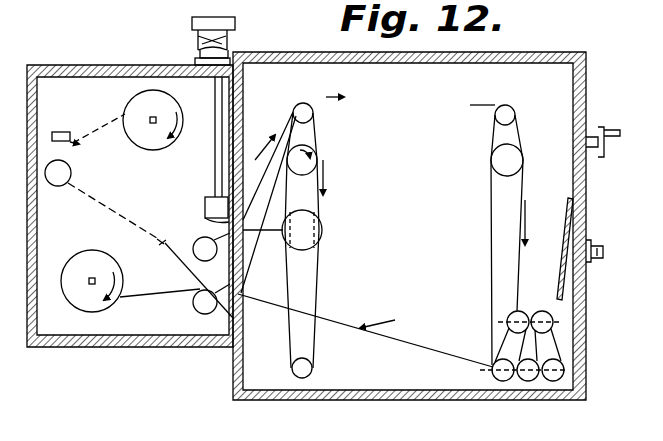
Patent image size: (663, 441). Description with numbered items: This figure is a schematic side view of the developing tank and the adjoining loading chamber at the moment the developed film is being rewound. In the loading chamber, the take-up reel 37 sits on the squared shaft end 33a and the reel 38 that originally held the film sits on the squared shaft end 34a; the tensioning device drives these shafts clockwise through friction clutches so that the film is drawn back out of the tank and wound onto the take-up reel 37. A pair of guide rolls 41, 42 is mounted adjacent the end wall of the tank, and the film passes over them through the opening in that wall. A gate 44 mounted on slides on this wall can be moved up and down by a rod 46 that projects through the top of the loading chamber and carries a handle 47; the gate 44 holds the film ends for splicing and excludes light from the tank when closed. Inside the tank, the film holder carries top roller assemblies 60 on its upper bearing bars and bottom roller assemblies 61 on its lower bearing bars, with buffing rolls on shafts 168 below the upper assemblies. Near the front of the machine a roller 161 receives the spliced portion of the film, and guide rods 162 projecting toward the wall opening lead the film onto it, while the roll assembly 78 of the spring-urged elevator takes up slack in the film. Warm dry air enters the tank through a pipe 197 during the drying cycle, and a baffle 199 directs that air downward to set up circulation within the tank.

The reel 38 is at (137, 108).
The squared end of shaft 34a is at (152, 124).
The rod 46 is at (215, 160).
The gate 44 is at (205, 214).
The take-up reel 37 is at (80, 262).
The squared end of shaft 33a is at (97, 278).
The guide roll 41 is at (192, 250).
The guide roll 42 is at (200, 305).
The handle 47 is at (222, 55).
The top roller assemblies 60 is at (303, 108).
The shafts 168 is at (313, 157).
The roller 161 is at (320, 238).
The guide rods 162 is at (268, 231).
The bottom roller assemblies 61 is at (310, 368).
The roll assembly 78 is at (541, 312).
The baffle 199 is at (575, 233).
The pipe 197 is at (598, 250).